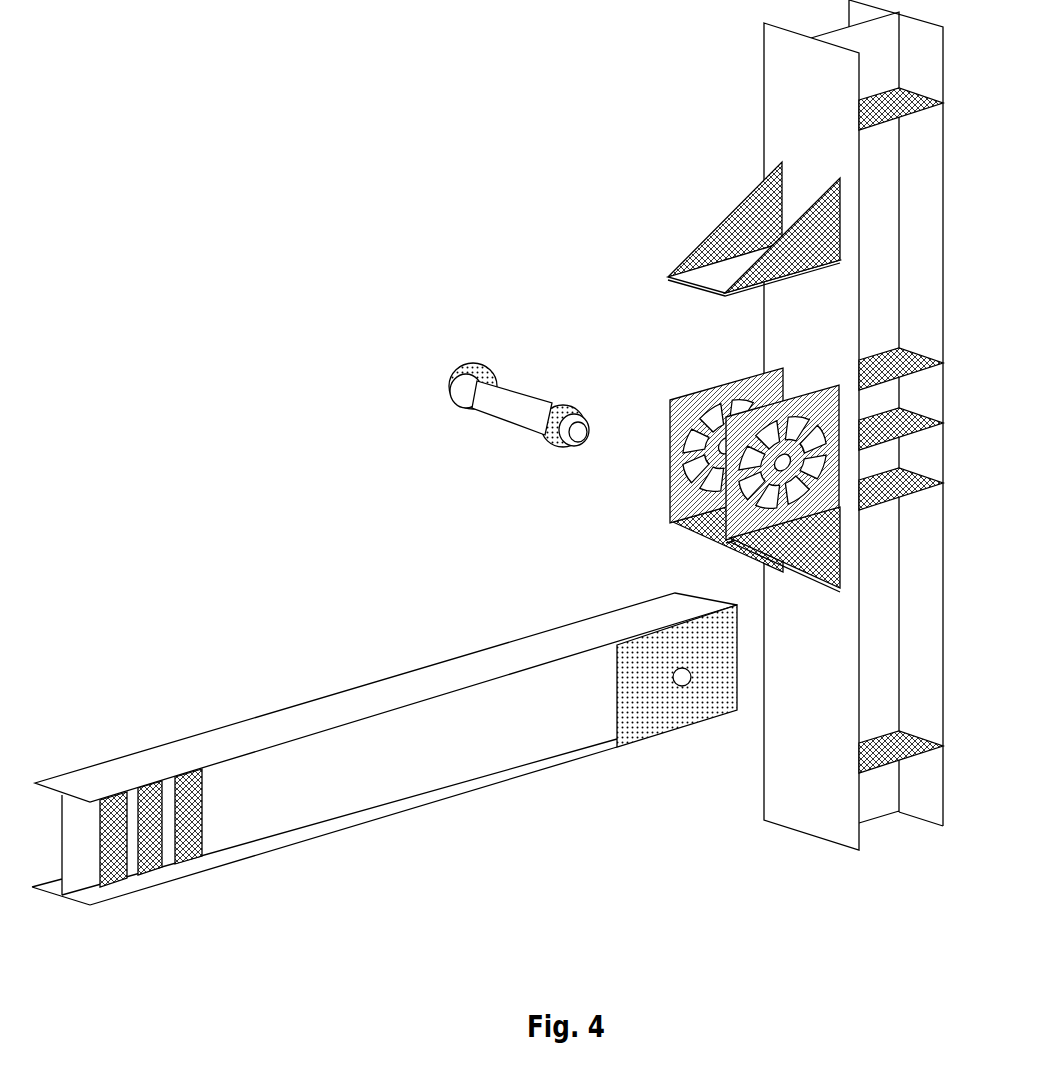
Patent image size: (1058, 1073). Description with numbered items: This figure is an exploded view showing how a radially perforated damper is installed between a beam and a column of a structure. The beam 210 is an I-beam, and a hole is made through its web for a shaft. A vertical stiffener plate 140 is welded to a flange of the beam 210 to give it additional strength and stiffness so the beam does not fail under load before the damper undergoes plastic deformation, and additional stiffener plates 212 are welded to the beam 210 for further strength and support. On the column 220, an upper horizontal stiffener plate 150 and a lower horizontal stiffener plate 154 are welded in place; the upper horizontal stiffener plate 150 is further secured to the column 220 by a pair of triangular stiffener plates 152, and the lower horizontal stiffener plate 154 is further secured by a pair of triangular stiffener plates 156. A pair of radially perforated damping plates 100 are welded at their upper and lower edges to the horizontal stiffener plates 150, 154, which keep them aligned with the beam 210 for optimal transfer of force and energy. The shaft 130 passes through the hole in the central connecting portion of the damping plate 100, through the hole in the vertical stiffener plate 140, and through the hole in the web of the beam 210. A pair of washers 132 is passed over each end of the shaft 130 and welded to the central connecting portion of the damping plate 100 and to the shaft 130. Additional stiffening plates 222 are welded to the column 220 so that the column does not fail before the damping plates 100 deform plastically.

The radially perforated damping plate 100 is at (686, 396).
The shaft 130 is at (510, 408).
The washer 132 is at (457, 400).
The vertical stiffener plate 140 is at (635, 727).
The upper horizontal stiffener plate 150 is at (715, 275).
The triangular stiffener plate 152 is at (727, 230).
The lower horizontal stiffener plate 154 is at (703, 520).
The triangular stiffener plate 156 is at (790, 552).
The beam 210 is at (405, 830).
The stiffener plate 212 is at (188, 843).
The column 220 is at (825, 855).
The stiffening plate 222 is at (903, 753).